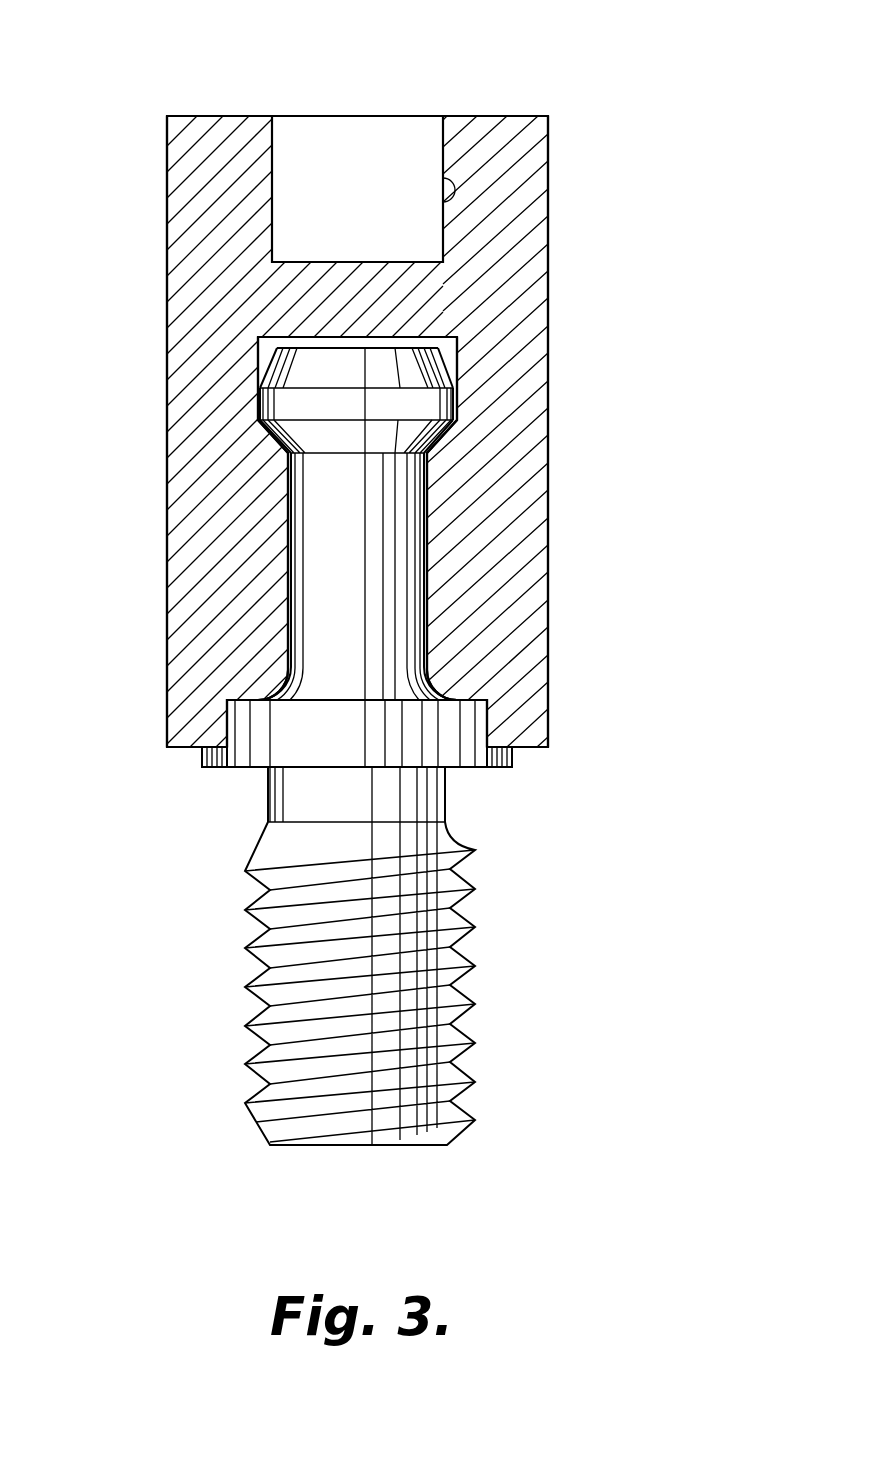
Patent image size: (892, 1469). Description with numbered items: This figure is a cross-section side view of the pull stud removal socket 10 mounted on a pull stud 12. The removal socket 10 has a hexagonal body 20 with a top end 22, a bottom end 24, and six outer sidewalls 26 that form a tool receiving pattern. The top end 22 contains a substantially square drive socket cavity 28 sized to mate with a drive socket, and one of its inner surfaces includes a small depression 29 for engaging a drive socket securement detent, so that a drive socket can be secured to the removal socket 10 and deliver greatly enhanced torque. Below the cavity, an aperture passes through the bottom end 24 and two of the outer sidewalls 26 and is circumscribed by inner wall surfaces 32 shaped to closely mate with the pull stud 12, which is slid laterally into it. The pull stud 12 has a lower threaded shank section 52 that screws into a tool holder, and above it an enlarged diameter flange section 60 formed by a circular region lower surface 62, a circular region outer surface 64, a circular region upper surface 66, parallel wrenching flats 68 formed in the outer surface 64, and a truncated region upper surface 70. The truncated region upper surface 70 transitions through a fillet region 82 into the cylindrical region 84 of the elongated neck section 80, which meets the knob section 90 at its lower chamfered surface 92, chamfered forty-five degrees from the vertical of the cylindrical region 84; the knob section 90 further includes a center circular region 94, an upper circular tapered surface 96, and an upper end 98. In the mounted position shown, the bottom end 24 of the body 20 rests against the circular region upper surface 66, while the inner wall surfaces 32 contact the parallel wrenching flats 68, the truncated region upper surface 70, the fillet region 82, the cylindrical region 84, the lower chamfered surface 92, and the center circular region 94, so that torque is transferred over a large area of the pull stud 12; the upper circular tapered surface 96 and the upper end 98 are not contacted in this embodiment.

The pull stud removal socket 10 is at (143, 85).
The pull stud 12 is at (480, 1062).
The body 20 is at (563, 185).
The top end 22 is at (503, 116).
The bottom end 24 is at (535, 748).
The outer sidewalls 26 is at (167, 162).
The drive socket cavity 28 is at (307, 147).
The small depression 29 is at (443, 183).
The inner wall surfaces 32 is at (433, 335).
The threaded shank section 52 is at (275, 978).
The flange section 60 is at (218, 772).
The circular region lower surface 62 is at (243, 767).
The circular region outer surface 64 is at (200, 753).
The circular region upper surface 66 is at (215, 742).
The parallel wrenching flats 68 is at (488, 720).
The truncated region upper surface 70 is at (475, 693).
The elongated neck section 80 is at (445, 515).
The fillet region 82 is at (277, 687).
The cylindrical region 84 is at (297, 604).
The knob section 90 is at (238, 395).
The lower chamfered surface 92 is at (270, 437).
The center circular region 94 is at (260, 403).
The upper circular tapered surface 96 is at (272, 365).
The upper end 98 is at (333, 348).